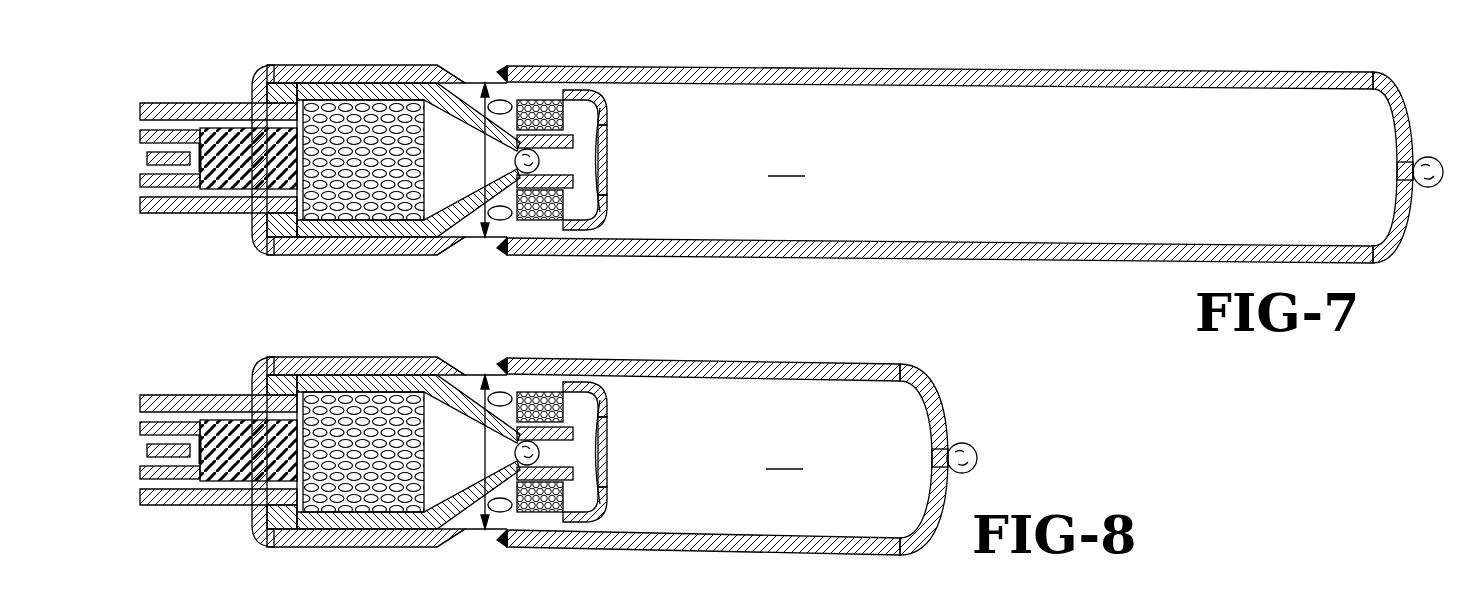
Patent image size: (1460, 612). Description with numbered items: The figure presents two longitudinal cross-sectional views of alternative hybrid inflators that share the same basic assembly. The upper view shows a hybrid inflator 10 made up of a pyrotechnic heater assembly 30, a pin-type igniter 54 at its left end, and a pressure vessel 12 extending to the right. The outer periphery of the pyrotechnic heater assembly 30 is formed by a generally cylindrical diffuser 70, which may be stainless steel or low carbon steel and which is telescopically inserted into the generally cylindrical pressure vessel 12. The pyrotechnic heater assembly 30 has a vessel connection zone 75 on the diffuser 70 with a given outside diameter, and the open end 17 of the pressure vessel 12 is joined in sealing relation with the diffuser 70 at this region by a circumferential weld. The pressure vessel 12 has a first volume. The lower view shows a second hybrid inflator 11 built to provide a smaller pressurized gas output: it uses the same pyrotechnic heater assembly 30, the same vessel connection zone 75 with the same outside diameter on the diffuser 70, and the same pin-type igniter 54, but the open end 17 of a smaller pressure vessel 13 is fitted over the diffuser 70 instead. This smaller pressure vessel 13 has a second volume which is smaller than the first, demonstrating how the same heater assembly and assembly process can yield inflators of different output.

In FIG. 7, the hybrid inflator 10 is at (1153, 60).
In FIG. 8, the hybrid inflator 11 is at (965, 384).
In FIG. 7, the pressure vessel 12 is at (928, 118).
In FIG. 8, the pressure vessel 13 is at (757, 407).
In FIG. 7, the open end 17 is at (577, 256).
In FIG. 8, the open end 17 is at (579, 560).
In FIG. 7, the pyrotechnic heater assembly 30 is at (466, 60).
In FIG. 8, the pyrotechnic heater assembly 30 is at (497, 429).
In FIG. 7, the pin-type igniter 54 is at (212, 120).
In FIG. 8, the pin-type igniter 54 is at (218, 415).
In FIG. 7, the diffuser 70 is at (360, 249).
In FIG. 8, the diffuser 70 is at (386, 472).
In FIG. 7, the vessel connection zone 75 is at (500, 250).
In FIG. 8, the vessel connection zone 75 is at (510, 473).